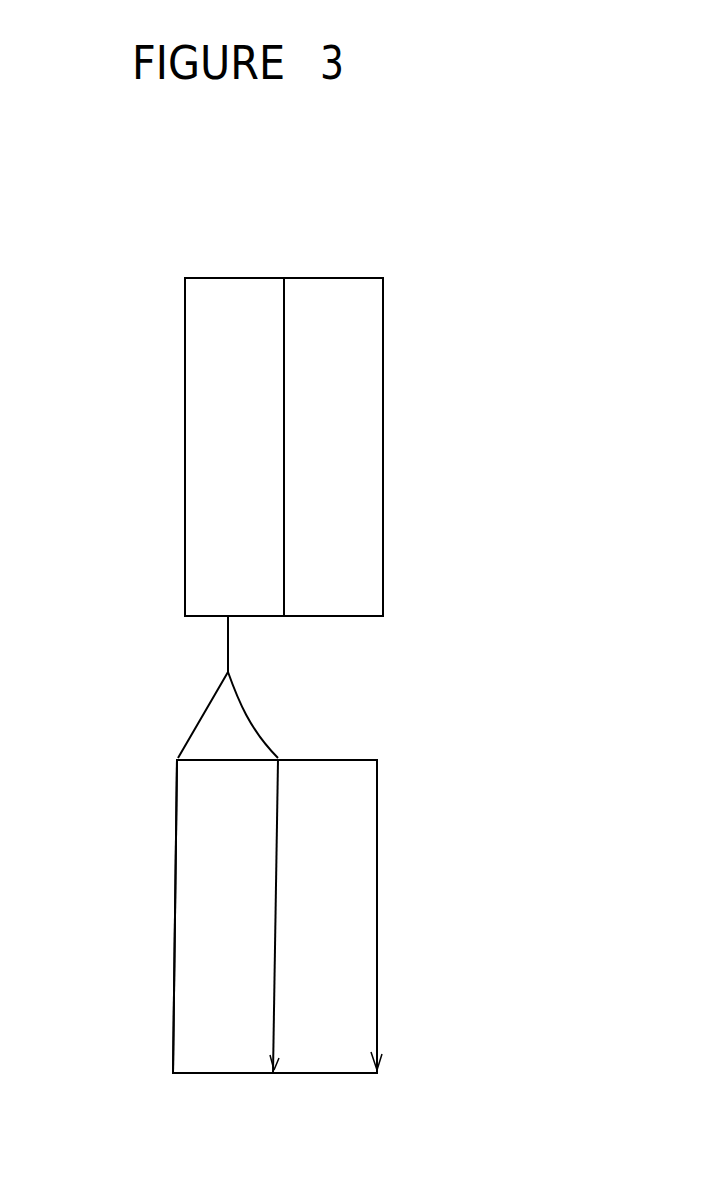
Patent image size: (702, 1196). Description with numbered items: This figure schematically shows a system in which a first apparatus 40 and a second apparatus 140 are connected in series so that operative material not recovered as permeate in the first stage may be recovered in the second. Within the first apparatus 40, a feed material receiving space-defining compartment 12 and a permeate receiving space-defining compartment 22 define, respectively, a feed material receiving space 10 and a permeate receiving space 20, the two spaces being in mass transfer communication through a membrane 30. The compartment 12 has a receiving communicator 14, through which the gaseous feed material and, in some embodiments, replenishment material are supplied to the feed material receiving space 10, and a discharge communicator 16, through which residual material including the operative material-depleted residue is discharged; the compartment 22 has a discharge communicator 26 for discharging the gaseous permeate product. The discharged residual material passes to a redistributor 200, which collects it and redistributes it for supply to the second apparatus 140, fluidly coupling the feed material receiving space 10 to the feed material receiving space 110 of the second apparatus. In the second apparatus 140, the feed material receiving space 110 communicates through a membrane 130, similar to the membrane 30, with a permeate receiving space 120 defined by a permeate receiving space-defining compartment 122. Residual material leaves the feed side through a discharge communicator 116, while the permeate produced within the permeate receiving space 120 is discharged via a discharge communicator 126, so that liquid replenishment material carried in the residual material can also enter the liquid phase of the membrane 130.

The feed material receiving space 10 is at (243, 491).
The permeate receiving space 20 is at (361, 490).
The feed material receiving space-defining compartment 12 is at (183, 384).
The receiving communicator 14 is at (235, 278).
The discharge communicator 16 is at (225, 621).
The permeate receiving space-defining compartment 22 is at (384, 404).
The discharge communicator 26 is at (338, 620).
The membrane 30 is at (287, 386).
The first apparatus 40 is at (400, 540).
The redistributor 200 is at (262, 721).
The feed material receiving space 110 is at (235, 936).
The permeate receiving space 120 is at (172, 839).
The permeate receiving space-defining compartment 122 is at (377, 823).
The discharge communicator 126 is at (325, 1078).
The membrane 130 is at (280, 832).
The second apparatus 140 is at (197, 755).
The discharge communicator 116 is at (223, 1078).